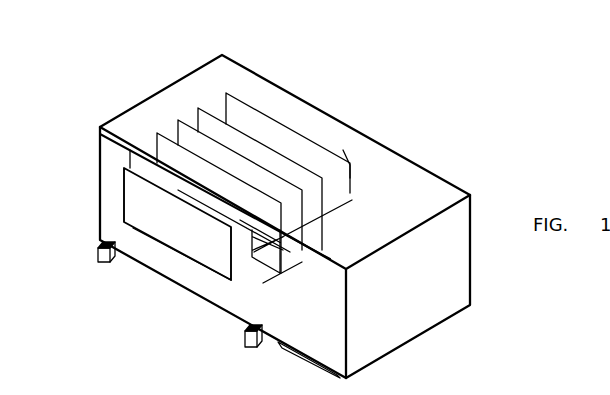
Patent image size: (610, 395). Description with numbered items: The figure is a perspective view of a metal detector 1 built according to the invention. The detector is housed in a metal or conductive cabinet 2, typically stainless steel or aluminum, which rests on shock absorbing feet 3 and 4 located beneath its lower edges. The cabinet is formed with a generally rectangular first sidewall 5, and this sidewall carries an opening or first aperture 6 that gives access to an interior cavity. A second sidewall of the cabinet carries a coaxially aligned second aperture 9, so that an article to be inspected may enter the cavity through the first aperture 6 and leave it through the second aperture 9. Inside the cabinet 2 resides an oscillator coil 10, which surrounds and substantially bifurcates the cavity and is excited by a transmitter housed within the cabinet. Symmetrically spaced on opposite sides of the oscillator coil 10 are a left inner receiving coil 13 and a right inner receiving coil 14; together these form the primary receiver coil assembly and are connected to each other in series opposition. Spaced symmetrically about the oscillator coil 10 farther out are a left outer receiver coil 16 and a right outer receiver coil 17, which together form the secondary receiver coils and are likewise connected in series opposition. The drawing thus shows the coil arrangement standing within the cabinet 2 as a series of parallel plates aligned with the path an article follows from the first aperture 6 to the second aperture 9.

The metal detector 1 is at (155, 312).
The cabinet 2 is at (435, 190).
The shock absorbing foot 3 is at (245, 337).
The shock absorbing foot 4 is at (97, 247).
The first sidewall 5 is at (328, 347).
The first aperture 6 is at (124, 217).
The second aperture 9 is at (347, 160).
The oscillator coil 10 is at (178, 120).
The left inner receiving coil 13 is at (157, 133).
The right inner receiving coil 14 is at (207, 110).
The left outer receiver coil 16 is at (263, 283).
The right outer receiver coil 17 is at (241, 93).